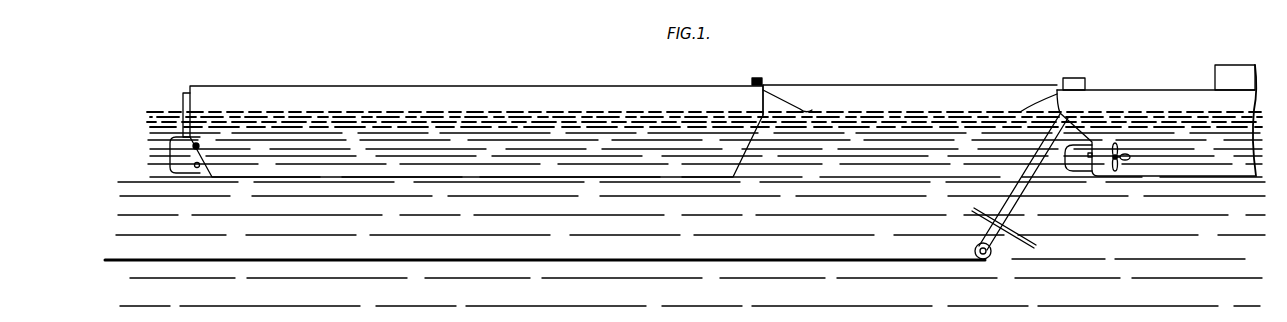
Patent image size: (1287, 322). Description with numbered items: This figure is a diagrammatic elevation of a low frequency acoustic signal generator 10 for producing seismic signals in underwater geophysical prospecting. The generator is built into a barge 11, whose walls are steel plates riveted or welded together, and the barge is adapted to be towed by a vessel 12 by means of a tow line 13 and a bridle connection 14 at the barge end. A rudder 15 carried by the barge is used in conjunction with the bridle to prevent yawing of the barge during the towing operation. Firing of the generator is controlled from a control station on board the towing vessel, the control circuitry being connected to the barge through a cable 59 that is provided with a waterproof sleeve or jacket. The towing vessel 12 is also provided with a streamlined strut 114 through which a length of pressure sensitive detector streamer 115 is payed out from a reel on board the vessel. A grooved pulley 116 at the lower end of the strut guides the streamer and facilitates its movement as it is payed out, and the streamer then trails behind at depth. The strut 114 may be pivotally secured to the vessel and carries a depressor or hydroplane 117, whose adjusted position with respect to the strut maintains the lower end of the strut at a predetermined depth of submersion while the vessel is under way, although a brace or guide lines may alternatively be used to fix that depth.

The low frequency acoustic signal generator 10 is at (232, 80).
The barge 11 is at (441, 86).
The vessel 12 is at (1129, 90).
The tow line 13 is at (925, 85).
The bridle connection 14 is at (808, 85).
The rudder 15 is at (172, 157).
The cable 59 is at (810, 110).
The streamlined strut 114 is at (1022, 198).
The pressure sensitive detector streamer 115 is at (851, 259).
The grooved pulley 116 is at (978, 246).
The depressor or hydroplane 117 is at (1026, 238).